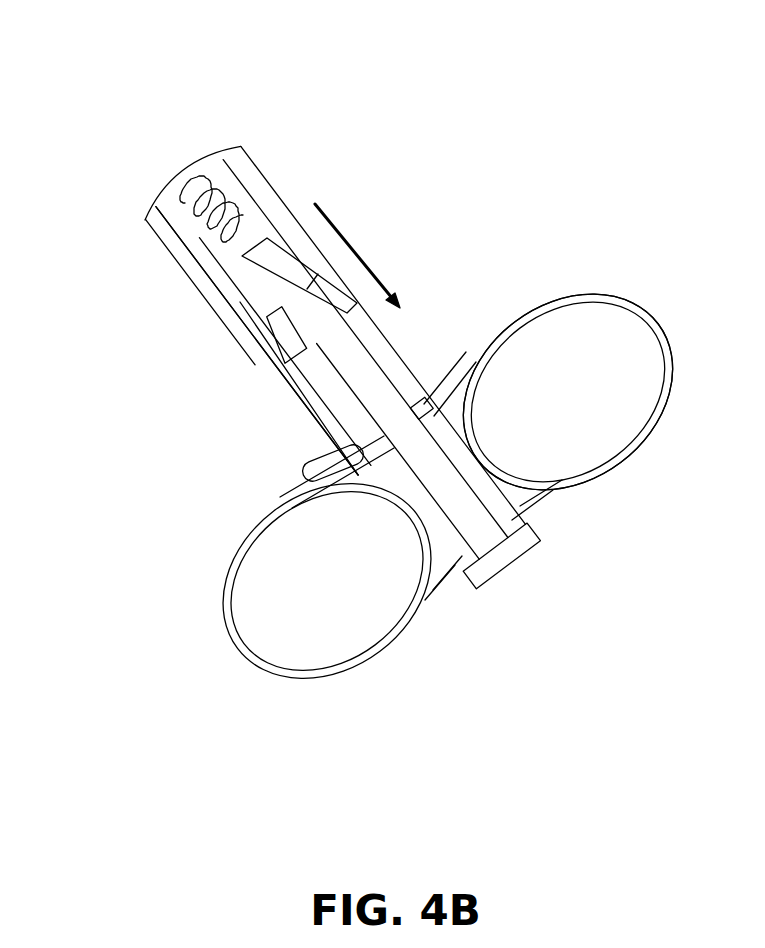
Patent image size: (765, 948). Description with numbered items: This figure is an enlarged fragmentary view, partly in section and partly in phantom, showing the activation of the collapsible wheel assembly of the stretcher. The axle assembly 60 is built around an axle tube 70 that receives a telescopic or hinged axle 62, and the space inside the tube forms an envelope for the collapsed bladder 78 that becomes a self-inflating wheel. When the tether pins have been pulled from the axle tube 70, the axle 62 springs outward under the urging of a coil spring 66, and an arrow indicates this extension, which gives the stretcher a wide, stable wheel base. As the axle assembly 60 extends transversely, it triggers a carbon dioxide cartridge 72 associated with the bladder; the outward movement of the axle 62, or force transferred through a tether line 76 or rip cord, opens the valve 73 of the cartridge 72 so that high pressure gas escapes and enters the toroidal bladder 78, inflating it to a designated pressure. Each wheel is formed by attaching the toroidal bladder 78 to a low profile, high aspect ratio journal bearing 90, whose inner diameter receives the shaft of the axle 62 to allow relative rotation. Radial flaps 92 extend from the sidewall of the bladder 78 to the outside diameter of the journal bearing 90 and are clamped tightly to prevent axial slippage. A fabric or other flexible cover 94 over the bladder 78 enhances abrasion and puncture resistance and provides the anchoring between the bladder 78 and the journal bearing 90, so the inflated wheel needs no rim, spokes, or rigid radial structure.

The axle assembly 60 is at (324, 133).
The axle 62 is at (387, 380).
The coil spring 66 is at (205, 180).
The axle tube 70 is at (173, 226).
The carbon dioxide cartridge 72 is at (300, 476).
The valve 73 is at (354, 461).
The tether line 76 is at (286, 379).
The toroidal bladder 78 is at (328, 640).
The journal bearing 90 is at (445, 433).
The radial flap 92 is at (457, 378).
The flexible cover 94 is at (642, 443).